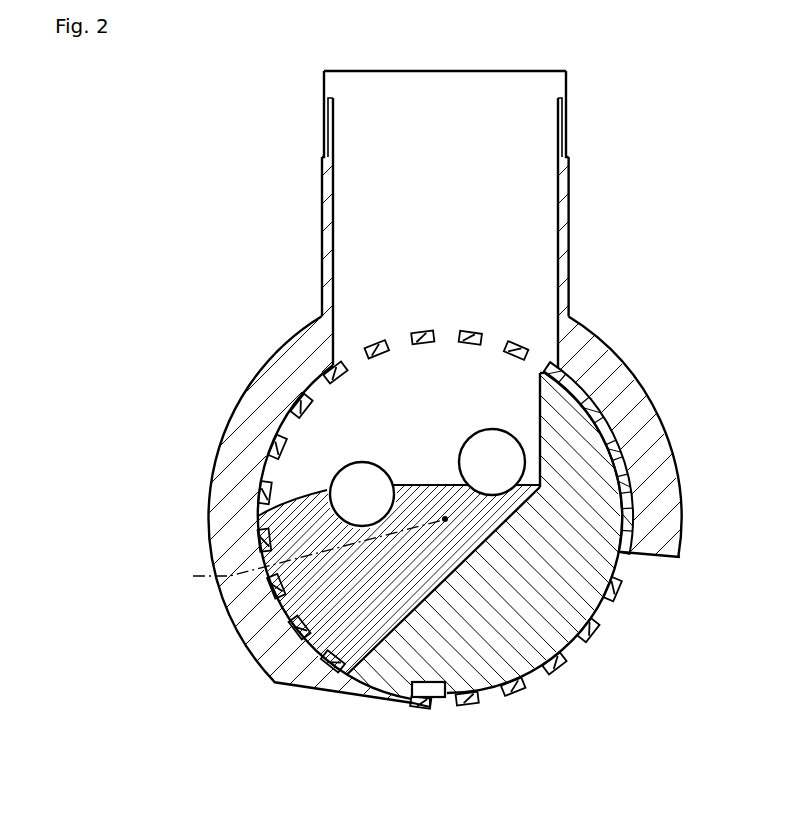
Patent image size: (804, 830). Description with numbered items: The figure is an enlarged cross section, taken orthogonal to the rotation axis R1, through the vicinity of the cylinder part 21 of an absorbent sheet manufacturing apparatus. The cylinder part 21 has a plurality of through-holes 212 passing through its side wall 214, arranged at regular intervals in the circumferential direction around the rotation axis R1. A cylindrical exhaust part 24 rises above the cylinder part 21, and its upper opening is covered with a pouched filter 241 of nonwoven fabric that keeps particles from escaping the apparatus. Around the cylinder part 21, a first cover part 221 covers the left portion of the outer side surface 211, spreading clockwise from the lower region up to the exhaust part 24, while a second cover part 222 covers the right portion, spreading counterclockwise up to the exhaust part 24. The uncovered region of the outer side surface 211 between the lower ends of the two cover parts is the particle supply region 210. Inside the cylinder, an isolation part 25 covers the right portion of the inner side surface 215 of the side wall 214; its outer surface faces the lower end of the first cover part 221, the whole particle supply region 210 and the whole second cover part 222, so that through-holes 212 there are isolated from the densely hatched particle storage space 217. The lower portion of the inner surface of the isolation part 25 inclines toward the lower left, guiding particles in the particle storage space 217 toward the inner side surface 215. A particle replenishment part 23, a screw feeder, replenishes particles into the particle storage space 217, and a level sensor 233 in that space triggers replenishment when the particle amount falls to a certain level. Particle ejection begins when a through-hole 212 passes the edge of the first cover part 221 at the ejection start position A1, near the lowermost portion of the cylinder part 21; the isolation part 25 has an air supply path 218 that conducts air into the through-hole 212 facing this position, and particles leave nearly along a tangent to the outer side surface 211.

The cylinder part 21 is at (412, 474).
The outer side surface 211 is at (247, 502).
The through-holes 212 is at (441, 532).
The side wall 214 is at (377, 343).
The inner side surface 215 is at (537, 646).
The particle storage space 217 is at (311, 464).
The air supply path 218 is at (425, 676).
The particle supply region 210 is at (480, 719).
The first cover part 221 is at (262, 410).
The second cover part 222 is at (633, 404).
The particle replenishment part 23 is at (503, 462).
The level sensor 233 is at (330, 495).
The exhaust part 24 is at (399, 219).
The filter 241 is at (323, 86).
The isolation part 25 is at (603, 567).
The rotation axis R1 is at (305, 552).
The ejection start position A1 is at (411, 717).